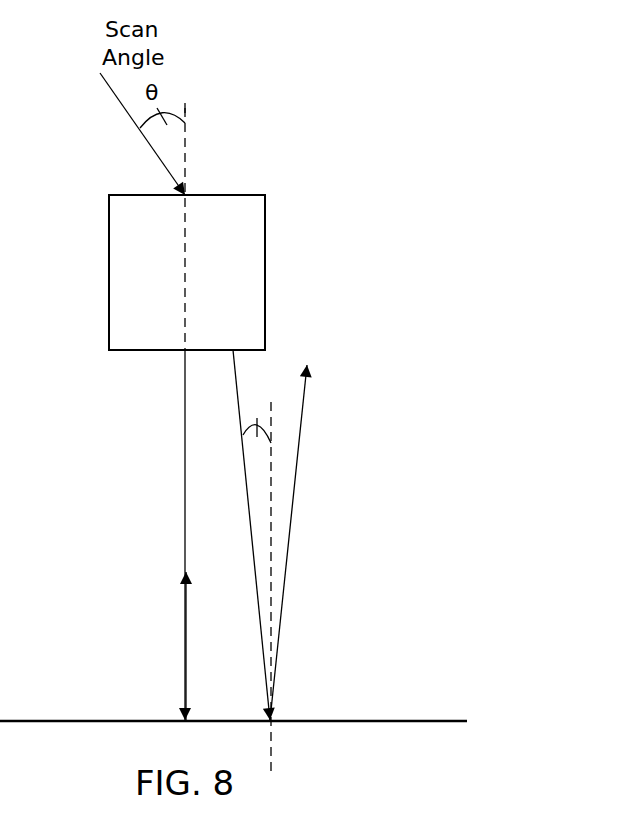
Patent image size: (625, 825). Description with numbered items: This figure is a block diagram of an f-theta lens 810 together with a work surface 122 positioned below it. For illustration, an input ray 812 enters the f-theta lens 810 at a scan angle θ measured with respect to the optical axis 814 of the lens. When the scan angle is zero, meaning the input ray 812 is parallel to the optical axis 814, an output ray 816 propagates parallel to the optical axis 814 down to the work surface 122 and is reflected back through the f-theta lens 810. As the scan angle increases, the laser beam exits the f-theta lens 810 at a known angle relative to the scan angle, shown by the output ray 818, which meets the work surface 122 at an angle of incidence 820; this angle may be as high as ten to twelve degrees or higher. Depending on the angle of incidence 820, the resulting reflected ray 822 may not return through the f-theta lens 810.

The input ray 812 is at (115, 96).
The optical axis 814 is at (187, 108).
The f-theta lens 810 is at (265, 211).
The output ray 816 is at (185, 447).
The output ray 818 is at (259, 594).
The angle of incidence 820 is at (256, 411).
The reflected ray 822 is at (300, 443).
The work surface 122 is at (430, 721).